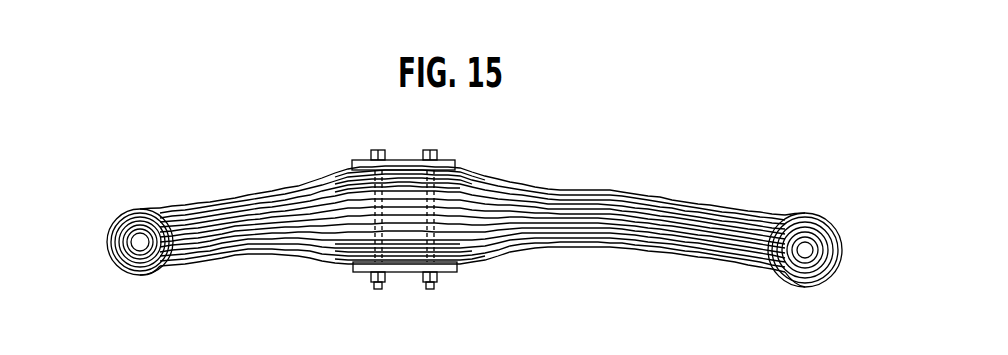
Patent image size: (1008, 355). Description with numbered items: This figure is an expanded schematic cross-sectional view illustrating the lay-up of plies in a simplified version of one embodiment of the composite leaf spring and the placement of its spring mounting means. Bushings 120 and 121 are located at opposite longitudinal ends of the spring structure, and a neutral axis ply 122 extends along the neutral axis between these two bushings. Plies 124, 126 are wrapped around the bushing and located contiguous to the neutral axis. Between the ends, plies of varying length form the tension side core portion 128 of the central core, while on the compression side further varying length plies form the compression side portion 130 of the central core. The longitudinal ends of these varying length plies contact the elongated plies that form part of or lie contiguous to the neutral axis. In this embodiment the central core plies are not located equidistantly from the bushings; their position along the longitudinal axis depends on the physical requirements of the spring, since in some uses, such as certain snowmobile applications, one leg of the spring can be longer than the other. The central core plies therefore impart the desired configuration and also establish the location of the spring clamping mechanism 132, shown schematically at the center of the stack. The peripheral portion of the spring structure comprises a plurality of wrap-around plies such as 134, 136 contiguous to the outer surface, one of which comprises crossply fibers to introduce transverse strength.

The bushing 120 is at (140, 233).
The bushing 121 is at (807, 240).
The neutral axis ply 122 is at (222, 230).
The ply 124 is at (198, 242).
The leaf 126 is at (247, 243).
The tension side core portion 128 is at (453, 235).
The compression side portion 130 is at (473, 186).
The spring clamping mechanism 132 is at (400, 278).
The wrap-around ply 134 is at (652, 207).
The wrap-around ply 136 is at (582, 190).